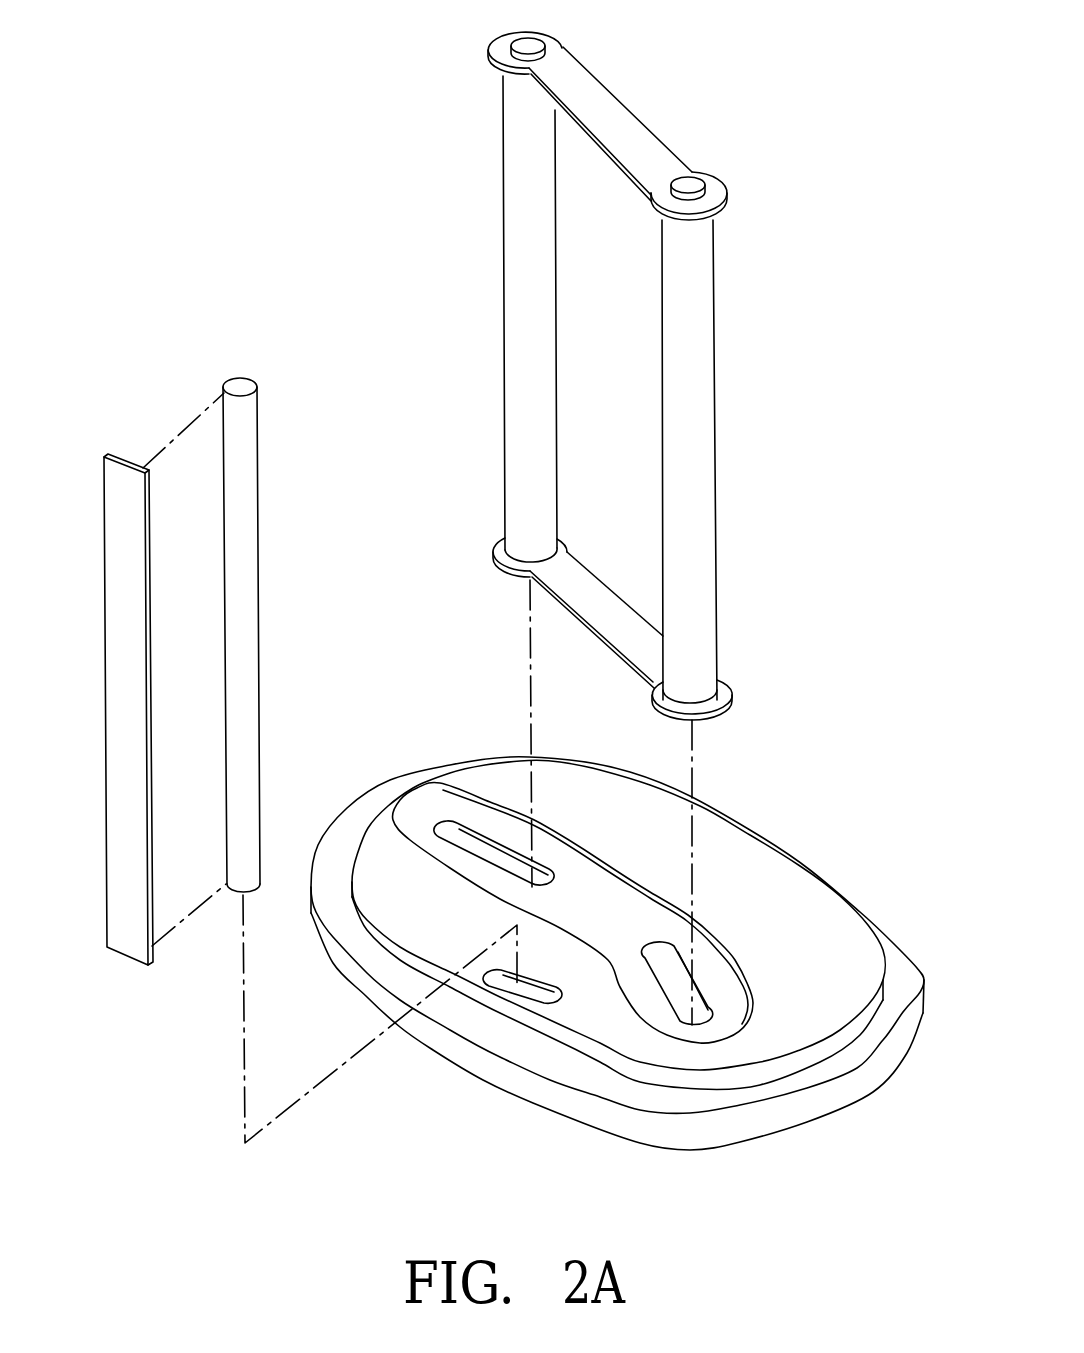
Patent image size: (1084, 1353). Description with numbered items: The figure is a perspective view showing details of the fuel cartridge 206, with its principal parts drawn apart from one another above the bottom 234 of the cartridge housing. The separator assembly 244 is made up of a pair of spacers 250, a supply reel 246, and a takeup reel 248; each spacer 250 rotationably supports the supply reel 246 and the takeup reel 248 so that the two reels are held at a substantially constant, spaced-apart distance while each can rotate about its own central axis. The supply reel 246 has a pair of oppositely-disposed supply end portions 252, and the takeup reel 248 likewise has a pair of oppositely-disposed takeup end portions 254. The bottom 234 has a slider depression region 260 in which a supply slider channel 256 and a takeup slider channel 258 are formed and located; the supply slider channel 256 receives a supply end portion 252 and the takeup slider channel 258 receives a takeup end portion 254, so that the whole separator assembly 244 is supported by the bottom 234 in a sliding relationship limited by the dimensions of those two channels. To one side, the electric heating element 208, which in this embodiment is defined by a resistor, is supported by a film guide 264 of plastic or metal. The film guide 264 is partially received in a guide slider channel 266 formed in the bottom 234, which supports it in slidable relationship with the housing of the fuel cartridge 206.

The fuel cartridge 206 is at (816, 57).
The electric heating element 208 is at (122, 934).
The bottom 234 is at (890, 1062).
The separator assembly 244 is at (745, 424).
The supply reel 246 is at (512, 214).
The takeup reel 248 is at (675, 297).
The spacers 250 is at (620, 125).
The supply end portions 252 is at (527, 46).
The takeup end portions 254 is at (708, 706).
The supply slider channel 256 is at (450, 830).
The takeup slider channel 258 is at (660, 945).
The slider depression region 260 is at (722, 998).
The film guide 264 is at (240, 387).
The guide slider channel 266 is at (533, 1003).